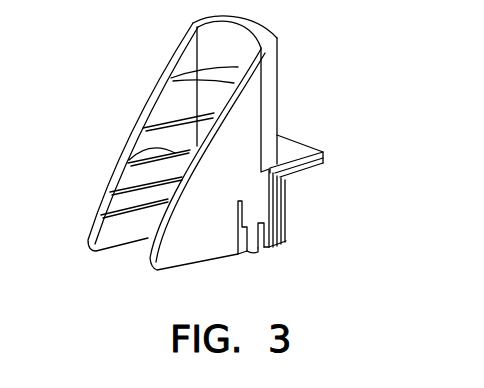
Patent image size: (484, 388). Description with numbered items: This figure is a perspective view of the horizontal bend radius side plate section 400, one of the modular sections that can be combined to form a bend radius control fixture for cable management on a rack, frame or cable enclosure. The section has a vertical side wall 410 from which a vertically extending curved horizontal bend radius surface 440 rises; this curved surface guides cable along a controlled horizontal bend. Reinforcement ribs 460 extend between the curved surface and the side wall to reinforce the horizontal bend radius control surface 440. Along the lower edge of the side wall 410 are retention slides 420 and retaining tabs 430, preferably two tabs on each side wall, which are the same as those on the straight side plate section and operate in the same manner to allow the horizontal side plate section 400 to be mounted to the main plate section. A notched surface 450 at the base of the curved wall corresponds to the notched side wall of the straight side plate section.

The horizontal bend radius side plate section 400 is at (139, 98).
The vertical side wall 410 is at (212, 250).
The retention slides 420 is at (272, 220).
The retaining tabs 430 is at (255, 248).
The curved horizontal bend radius surface 440 is at (268, 95).
The notched surface 450 is at (300, 155).
The reinforcement ribs 460 is at (123, 153).